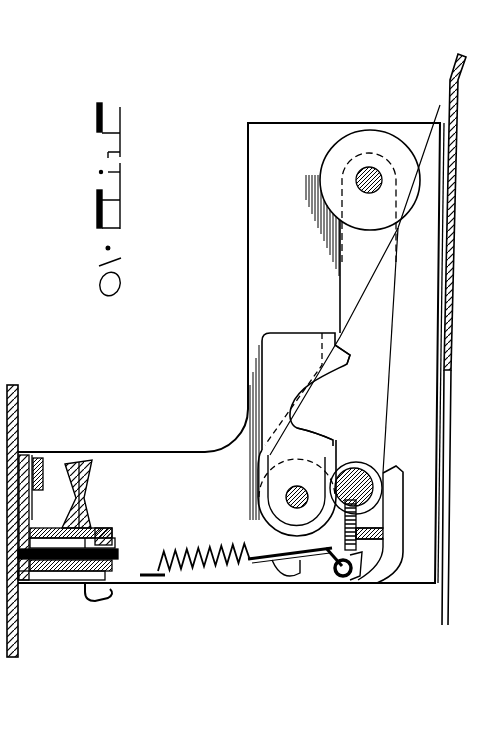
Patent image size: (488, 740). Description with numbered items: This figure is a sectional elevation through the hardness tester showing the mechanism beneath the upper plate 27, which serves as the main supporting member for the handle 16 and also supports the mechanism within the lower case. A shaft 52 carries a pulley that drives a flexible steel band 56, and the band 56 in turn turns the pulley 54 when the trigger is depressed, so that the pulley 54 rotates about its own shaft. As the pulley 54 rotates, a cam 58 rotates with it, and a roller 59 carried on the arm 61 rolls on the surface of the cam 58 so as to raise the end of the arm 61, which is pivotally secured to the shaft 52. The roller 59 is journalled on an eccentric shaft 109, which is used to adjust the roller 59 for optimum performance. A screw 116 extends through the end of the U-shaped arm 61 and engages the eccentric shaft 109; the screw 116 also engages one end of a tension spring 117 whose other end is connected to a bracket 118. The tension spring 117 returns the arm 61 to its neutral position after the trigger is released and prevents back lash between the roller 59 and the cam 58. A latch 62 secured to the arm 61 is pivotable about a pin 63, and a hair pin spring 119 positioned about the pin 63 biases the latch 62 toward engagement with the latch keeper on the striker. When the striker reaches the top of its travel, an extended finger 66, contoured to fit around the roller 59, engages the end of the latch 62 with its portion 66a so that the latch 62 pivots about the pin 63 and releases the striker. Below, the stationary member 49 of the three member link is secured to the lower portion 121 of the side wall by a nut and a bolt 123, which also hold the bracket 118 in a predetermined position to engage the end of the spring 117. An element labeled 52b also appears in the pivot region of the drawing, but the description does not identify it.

The handle 16 is at (152, 452).
The upper plate 27 is at (455, 328).
The stationary member 49 is at (46, 524).
The shaft 52 is at (369, 193).
The pivot pin 52b is at (297, 482).
The pulley 54 is at (270, 520).
The flexible steel band 56 is at (345, 338).
The cam 58 is at (338, 438).
The roller 59 is at (374, 478).
The arm 61 is at (392, 378).
The latch 62 is at (395, 578).
The pin 63 is at (351, 578).
The extended finger 66 is at (290, 333).
The portion of the finger 66a is at (349, 364).
The eccentric shaft 109 is at (360, 468).
The screw 116 is at (364, 572).
The tension spring 117 is at (224, 580).
The bracket 118 is at (83, 602).
The hair pin spring 119 is at (309, 572).
The lower portion of the side wall 121 is at (28, 602).
The bolt 123 is at (60, 583).